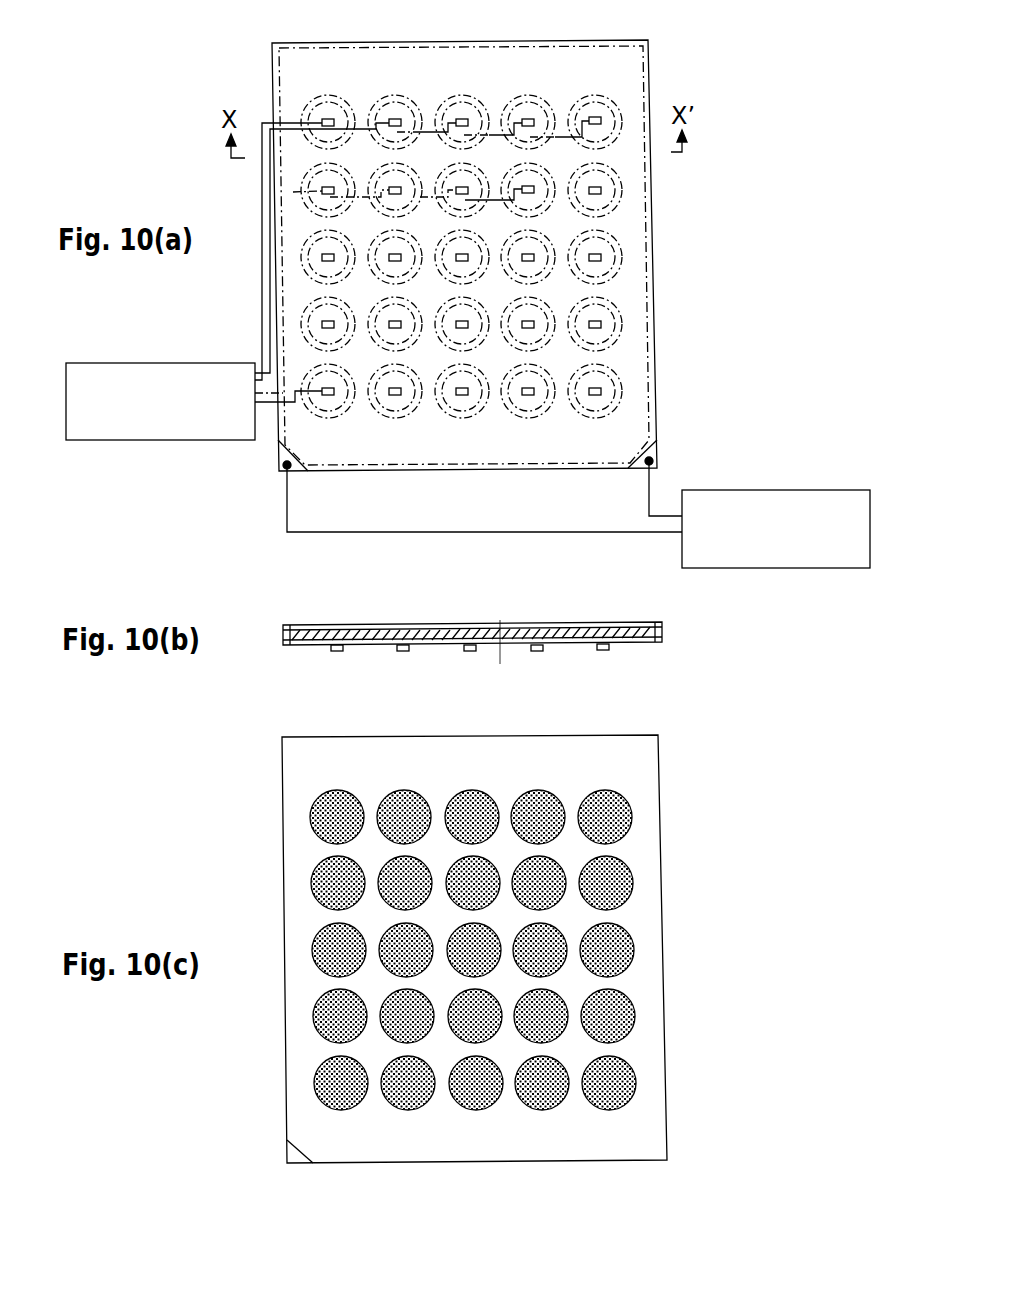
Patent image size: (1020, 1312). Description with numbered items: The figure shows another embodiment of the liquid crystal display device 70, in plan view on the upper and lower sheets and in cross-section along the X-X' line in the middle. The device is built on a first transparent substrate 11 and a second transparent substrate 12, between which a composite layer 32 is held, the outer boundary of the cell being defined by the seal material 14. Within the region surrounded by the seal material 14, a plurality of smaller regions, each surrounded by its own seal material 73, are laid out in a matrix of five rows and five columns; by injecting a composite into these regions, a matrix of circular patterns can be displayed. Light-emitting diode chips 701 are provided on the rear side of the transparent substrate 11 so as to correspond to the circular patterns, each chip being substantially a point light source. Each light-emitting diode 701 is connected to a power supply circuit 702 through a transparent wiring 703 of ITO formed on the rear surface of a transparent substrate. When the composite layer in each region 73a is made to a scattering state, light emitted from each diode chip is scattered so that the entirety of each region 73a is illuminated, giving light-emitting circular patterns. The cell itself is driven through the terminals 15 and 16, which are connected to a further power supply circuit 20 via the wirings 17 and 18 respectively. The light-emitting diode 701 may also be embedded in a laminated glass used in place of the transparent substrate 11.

In FIG. 10A, the liquid crystal display device 70 is at (486, 235).
In FIG. 10B, the liquid crystal display device 70 is at (513, 637).
In FIG. 10C, the liquid crystal display device 70 is at (528, 943).
In FIG. 10A, the light-emitting diode chip 701 is at (594, 117).
In FIG. 10B, the light-emitting diode chip 701 is at (340, 652).
In FIG. 10A, the power supply circuit 702 is at (213, 362).
In FIG. 10A, the transparent wiring 703 is at (262, 308).
In FIG. 10A, the seal material 73 is at (610, 97).
In FIG. 10C, the region 73a is at (630, 815).
In FIG. 10A, the second seal material 14 is at (650, 283).
In FIG. 10B, the second seal material 14 is at (283, 634).
In FIG. 10A, the second transparent substrate 12 is at (625, 356).
In FIG. 10B, the second transparent substrate 12 is at (488, 628).
In FIG. 10C, the second transparent substrate 12 is at (640, 992).
In FIG. 10A, the first transparent substrate 11 is at (516, 255).
In FIG. 10B, the first transparent substrate 11 is at (500, 662).
In FIG. 10C, the first transparent substrate 11 is at (528, 949).
In FIG. 10A, the terminal 15 is at (284, 465).
In FIG. 10A, the terminal 16 is at (654, 457).
In FIG. 10A, the wiring 17 is at (586, 530).
In FIG. 10A, the wiring 18 is at (652, 504).
In FIG. 10A, the power supply circuit 20 is at (775, 490).
In FIG. 10B, the composite layer 32 is at (388, 628).